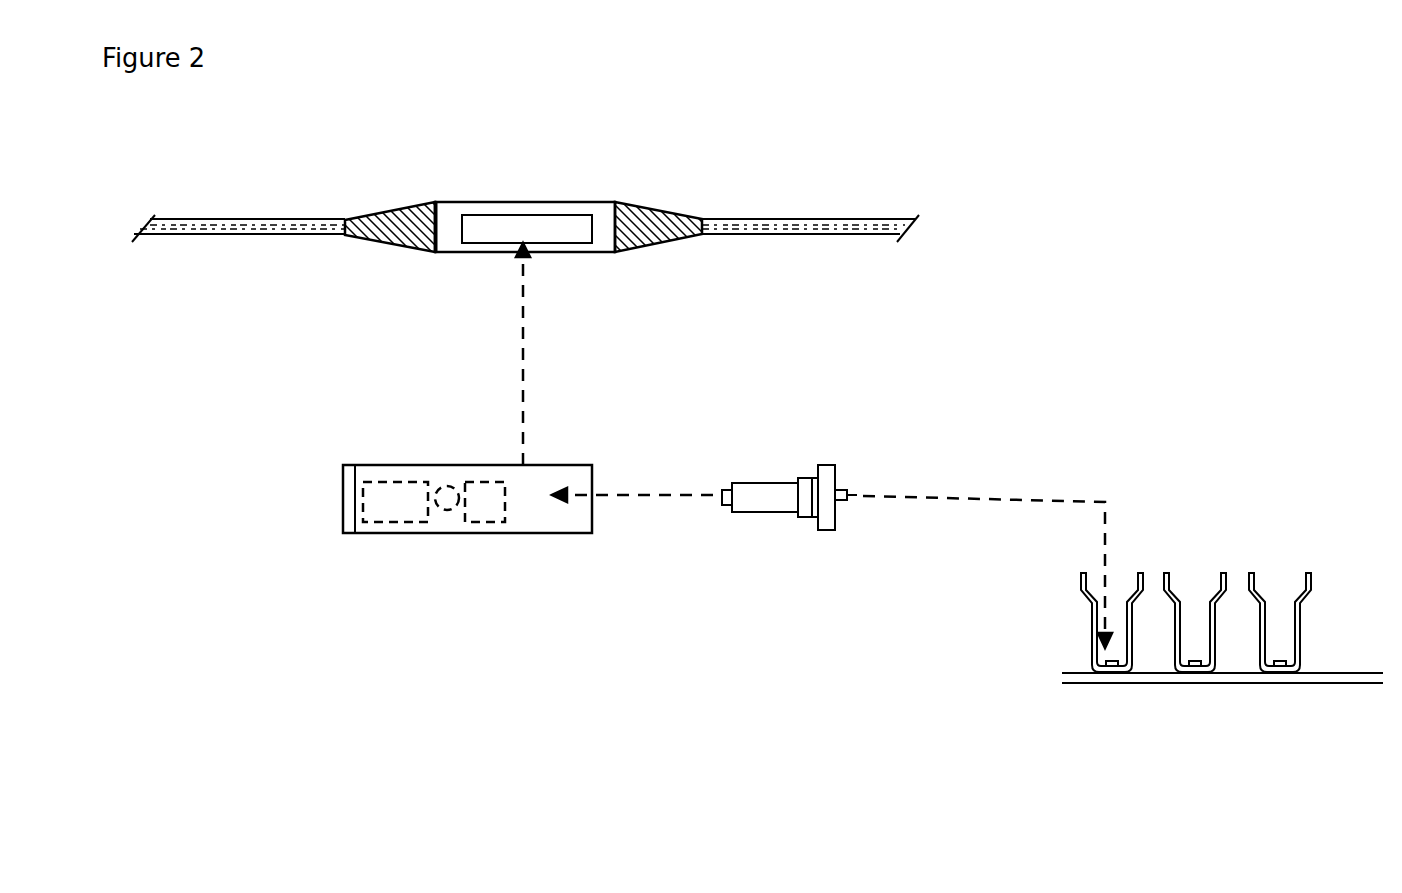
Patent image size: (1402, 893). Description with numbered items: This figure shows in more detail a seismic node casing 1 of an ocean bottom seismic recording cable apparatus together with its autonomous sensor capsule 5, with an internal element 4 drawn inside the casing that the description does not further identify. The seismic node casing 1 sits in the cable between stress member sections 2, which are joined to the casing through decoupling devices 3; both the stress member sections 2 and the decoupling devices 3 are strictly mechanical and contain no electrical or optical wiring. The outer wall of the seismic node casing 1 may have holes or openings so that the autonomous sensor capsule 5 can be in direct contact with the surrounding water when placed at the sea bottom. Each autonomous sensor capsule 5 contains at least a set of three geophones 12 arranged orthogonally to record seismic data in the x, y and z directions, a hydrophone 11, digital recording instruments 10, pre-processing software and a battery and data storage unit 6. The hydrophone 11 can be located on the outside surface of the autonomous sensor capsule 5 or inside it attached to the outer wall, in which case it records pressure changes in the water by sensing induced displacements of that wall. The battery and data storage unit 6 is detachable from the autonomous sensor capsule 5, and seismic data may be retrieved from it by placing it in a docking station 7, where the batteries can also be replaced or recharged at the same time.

The seismic node casing 1 is at (492, 254).
The stress member sections 2 is at (290, 220).
The decoupling devices 3 is at (420, 202).
The identification element / RFID tag 4 is at (557, 239).
The autonomous sensor capsule 5 is at (478, 537).
The battery and data storage unit 6 is at (790, 517).
The docking station 7 is at (1137, 688).
The digital recording instruments 10 is at (395, 487).
The hydrophone 11 is at (445, 485).
The geophones 12 is at (495, 493).